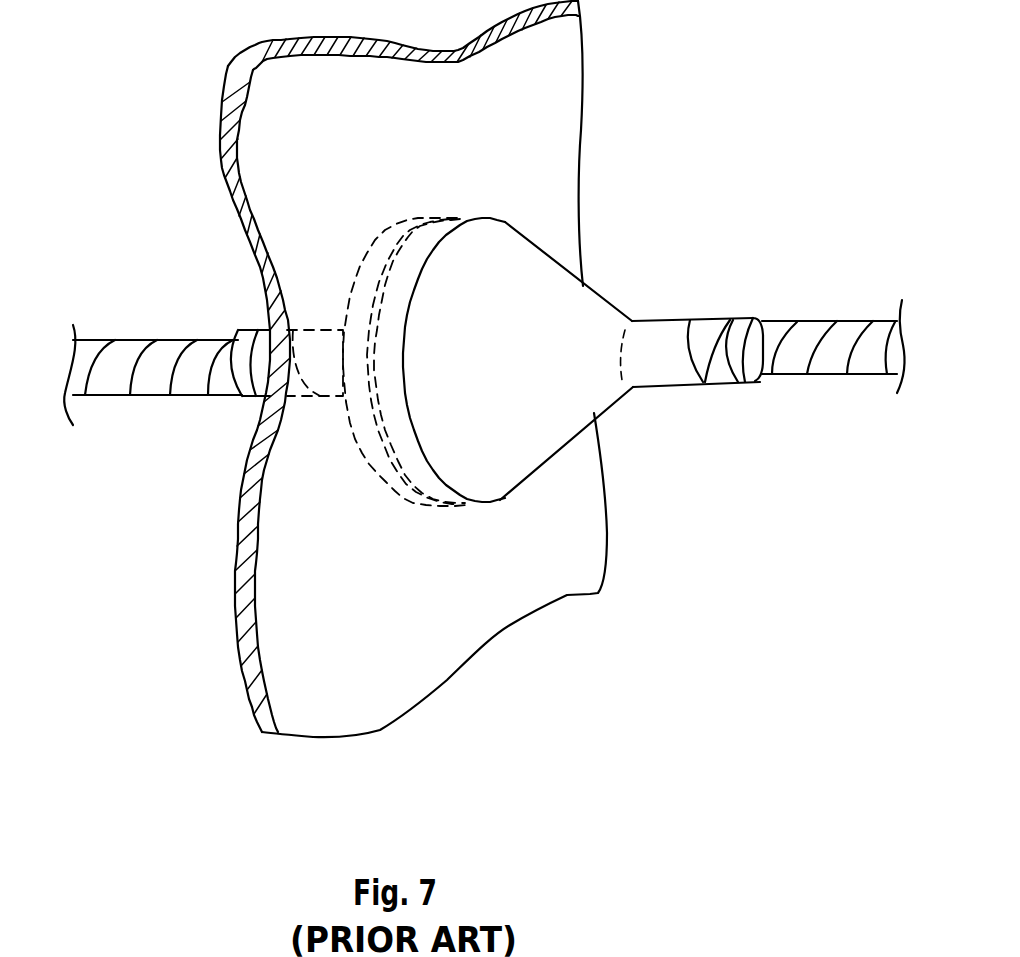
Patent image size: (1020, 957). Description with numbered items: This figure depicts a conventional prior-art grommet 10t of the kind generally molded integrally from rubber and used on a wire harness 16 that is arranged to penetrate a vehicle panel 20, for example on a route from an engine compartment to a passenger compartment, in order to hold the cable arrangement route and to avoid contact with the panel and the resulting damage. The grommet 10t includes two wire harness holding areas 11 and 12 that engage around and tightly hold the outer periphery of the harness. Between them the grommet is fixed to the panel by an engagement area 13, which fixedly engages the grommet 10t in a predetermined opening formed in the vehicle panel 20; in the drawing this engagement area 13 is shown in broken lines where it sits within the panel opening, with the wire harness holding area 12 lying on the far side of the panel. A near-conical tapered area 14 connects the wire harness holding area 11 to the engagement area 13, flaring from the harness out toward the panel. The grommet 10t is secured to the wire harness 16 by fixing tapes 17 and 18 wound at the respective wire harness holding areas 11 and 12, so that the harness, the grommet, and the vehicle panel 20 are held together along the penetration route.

The vehicle panel 20 is at (586, 92).
The tapered area 14 is at (547, 453).
The engagement area 13 is at (443, 513).
The wire harness holding area 12 is at (327, 328).
The fixing tape 18 is at (250, 330).
The wire harness holding area 11 is at (668, 320).
The fixing tape 17 is at (727, 320).
The wire harness 16 is at (850, 320).
The grommet 10t is at (663, 232).